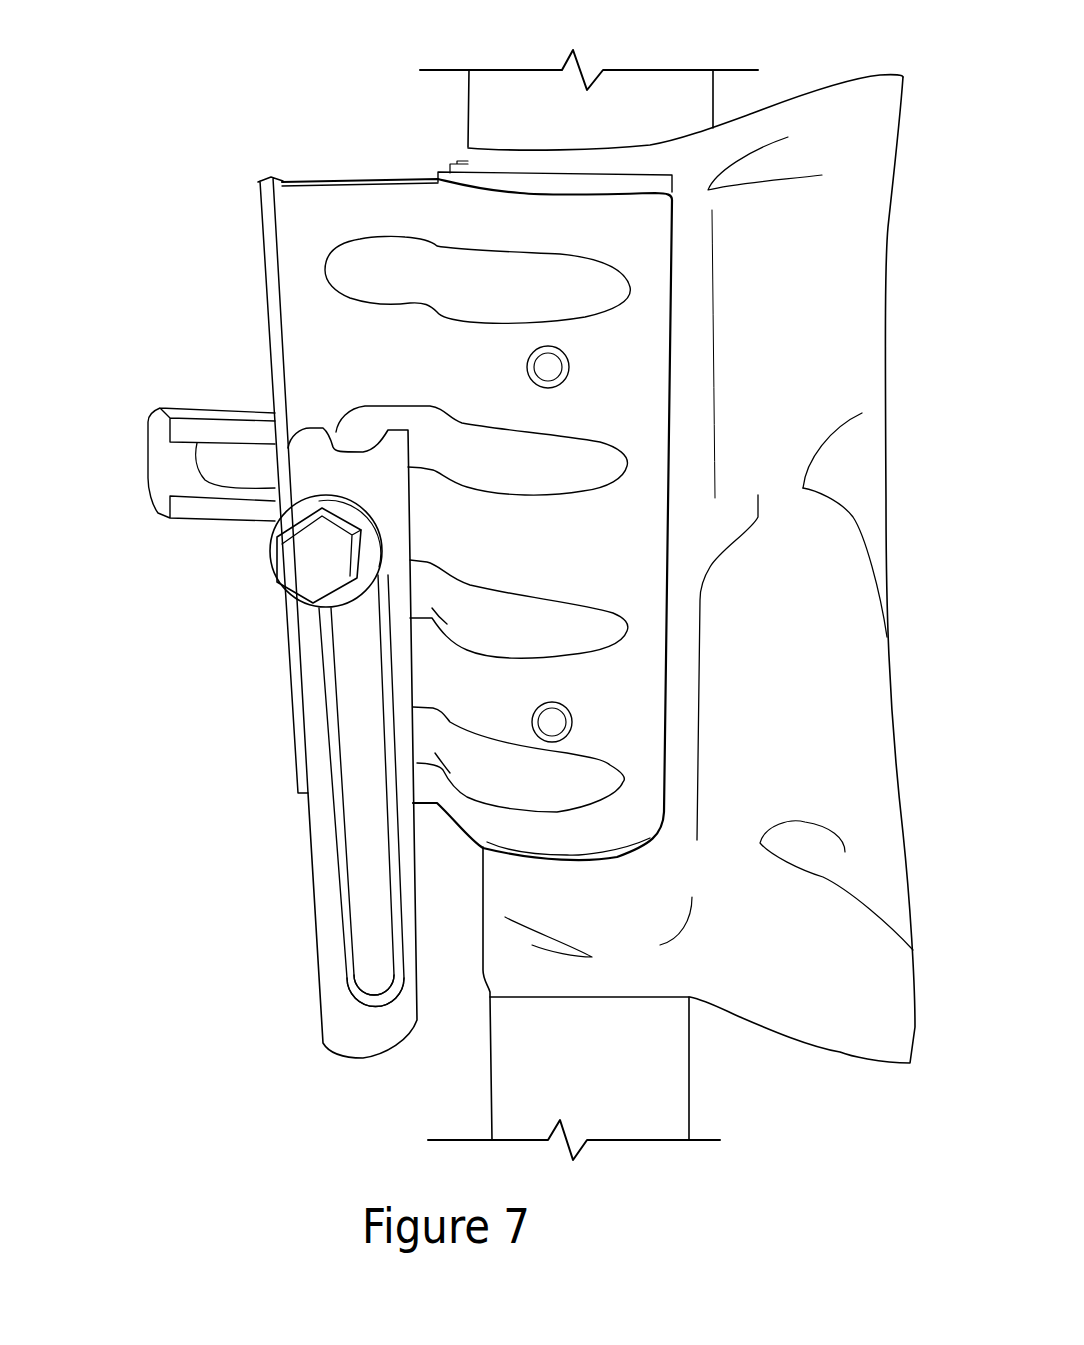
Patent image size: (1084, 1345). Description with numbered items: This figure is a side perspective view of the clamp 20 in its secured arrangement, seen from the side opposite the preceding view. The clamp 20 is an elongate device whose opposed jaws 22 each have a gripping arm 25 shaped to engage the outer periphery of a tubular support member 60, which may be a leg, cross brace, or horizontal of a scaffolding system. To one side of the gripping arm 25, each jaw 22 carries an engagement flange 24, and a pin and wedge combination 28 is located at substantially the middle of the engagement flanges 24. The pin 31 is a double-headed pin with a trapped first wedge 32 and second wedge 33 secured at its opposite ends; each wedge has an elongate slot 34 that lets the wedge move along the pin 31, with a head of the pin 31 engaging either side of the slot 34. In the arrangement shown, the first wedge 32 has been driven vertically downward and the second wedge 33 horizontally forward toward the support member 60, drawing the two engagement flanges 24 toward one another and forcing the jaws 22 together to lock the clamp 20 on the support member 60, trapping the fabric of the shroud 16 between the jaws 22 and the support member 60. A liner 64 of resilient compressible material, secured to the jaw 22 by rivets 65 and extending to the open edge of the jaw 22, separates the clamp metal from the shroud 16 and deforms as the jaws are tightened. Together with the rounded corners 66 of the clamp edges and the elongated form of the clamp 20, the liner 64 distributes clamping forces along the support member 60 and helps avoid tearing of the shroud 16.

The shroud 16 is at (833, 1015).
The clamp 20 is at (220, 122).
The jaw 22 is at (666, 573).
The engagement flange 24 is at (266, 190).
The gripping arm 25 is at (472, 332).
The pin and wedge combination 28 is at (243, 578).
The pin 31 is at (298, 580).
The first wedge 32 is at (325, 810).
The second wedge 33 is at (185, 415).
The elongate slot 34 is at (343, 968).
The support member 60 is at (680, 767).
The liner layer 64 is at (562, 185).
The rivets 65 is at (548, 367).
The rounded corners 66 is at (678, 183).